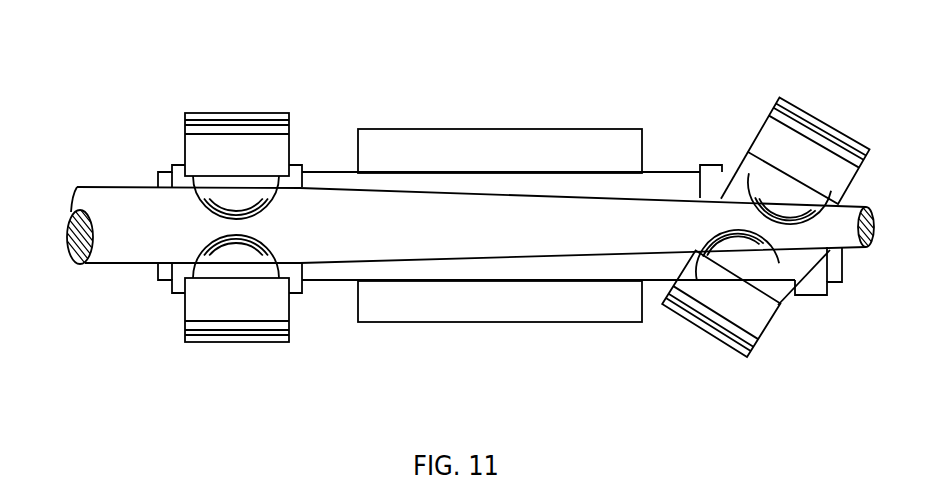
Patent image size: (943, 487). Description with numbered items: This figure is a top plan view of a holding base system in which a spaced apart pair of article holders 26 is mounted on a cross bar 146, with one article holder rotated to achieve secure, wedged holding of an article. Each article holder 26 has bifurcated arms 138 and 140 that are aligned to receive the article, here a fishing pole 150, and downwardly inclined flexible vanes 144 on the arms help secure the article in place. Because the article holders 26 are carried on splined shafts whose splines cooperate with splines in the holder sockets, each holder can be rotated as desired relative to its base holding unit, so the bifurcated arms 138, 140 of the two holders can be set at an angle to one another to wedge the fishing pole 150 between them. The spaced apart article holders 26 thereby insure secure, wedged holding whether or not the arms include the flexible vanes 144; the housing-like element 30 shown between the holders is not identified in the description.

The article holder 26 is at (160, 148).
The housing 30 is at (468, 147).
The bifurcated arm 138 is at (253, 145).
The bifurcated arm 140 is at (245, 315).
The flexible vane 144 is at (228, 188).
The cross bar 146 is at (535, 182).
The fishing pole 150 is at (490, 237).